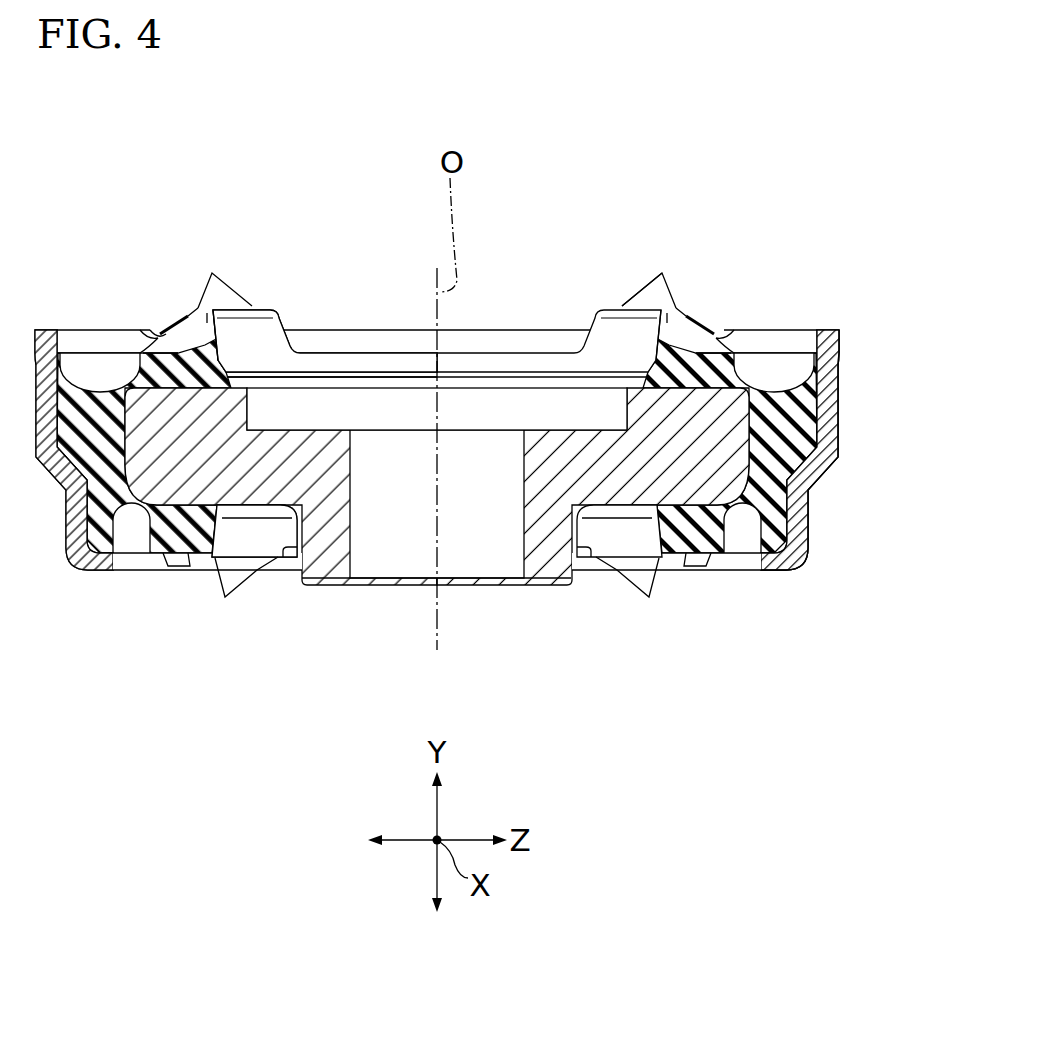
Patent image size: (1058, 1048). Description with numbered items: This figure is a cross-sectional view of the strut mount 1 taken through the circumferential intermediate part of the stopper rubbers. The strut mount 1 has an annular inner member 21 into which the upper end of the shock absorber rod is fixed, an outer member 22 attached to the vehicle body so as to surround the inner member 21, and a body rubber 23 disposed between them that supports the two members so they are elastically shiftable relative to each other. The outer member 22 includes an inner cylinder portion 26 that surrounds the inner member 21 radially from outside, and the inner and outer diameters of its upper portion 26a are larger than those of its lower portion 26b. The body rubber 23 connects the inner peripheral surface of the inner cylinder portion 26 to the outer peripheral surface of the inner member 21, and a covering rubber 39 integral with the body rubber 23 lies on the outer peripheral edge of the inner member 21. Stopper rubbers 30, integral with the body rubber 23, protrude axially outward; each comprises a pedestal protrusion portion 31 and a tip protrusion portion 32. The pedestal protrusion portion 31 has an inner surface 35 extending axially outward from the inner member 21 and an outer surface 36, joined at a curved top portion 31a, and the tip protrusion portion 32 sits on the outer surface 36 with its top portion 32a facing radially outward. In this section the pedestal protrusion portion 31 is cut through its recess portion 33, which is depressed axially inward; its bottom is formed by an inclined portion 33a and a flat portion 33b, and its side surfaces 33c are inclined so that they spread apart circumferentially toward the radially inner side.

The strut mount 1 is at (842, 128).
The inner member 21 is at (523, 388).
The outer member 22 is at (466, 520).
The body rubber 23 is at (773, 385).
The inner cylinder portion 26 is at (938, 622).
The upper portion 26a is at (840, 418).
The lower portion 26b is at (805, 522).
The stopper rubber 30 is at (523, 148).
The pedestal protrusion portion 31 is at (280, 312).
The top portion 31a is at (257, 303).
The tip protrusion portion 32 is at (215, 270).
The top portion 32a is at (648, 306).
The recess portion 33 is at (172, 329).
The inclined portion 33a is at (197, 338).
The flat portion 33b is at (153, 330).
The side surfaces 33c is at (205, 325).
The inner surface 35 is at (275, 337).
The outer surface 36 is at (173, 332).
The covering rubber 39 is at (480, 353).